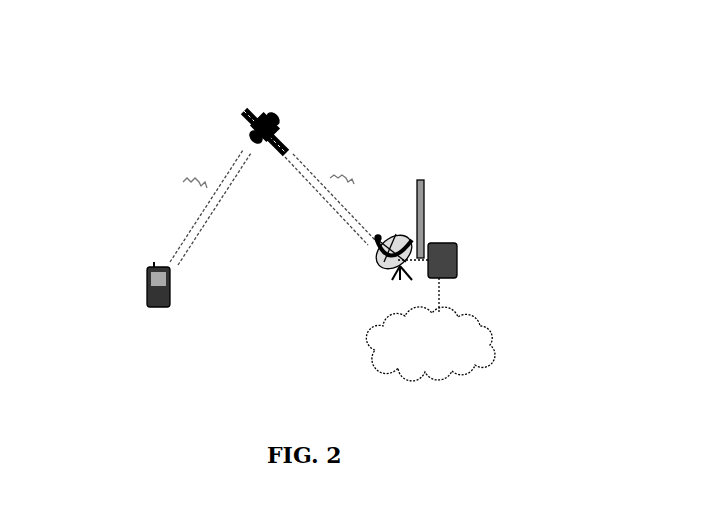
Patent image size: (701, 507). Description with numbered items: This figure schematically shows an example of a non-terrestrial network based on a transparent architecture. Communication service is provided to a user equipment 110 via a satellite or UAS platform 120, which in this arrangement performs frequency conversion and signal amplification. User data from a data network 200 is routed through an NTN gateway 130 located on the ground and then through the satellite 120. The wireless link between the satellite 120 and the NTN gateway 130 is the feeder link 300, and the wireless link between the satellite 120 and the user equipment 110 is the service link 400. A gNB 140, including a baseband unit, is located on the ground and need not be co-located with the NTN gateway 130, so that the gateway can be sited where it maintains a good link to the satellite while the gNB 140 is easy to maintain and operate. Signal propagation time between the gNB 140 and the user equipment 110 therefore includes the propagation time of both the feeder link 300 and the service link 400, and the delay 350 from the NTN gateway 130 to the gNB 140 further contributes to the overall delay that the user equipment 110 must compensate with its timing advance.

The user equipment 110 is at (147, 277).
The satellite or UAS platform 120 is at (265, 110).
The NTN gateway 130 is at (375, 262).
The gNB 140 is at (456, 242).
The data network 200 is at (430, 344).
The feeder link 300 is at (310, 167).
The delay 350 is at (426, 187).
The service link 400 is at (195, 218).